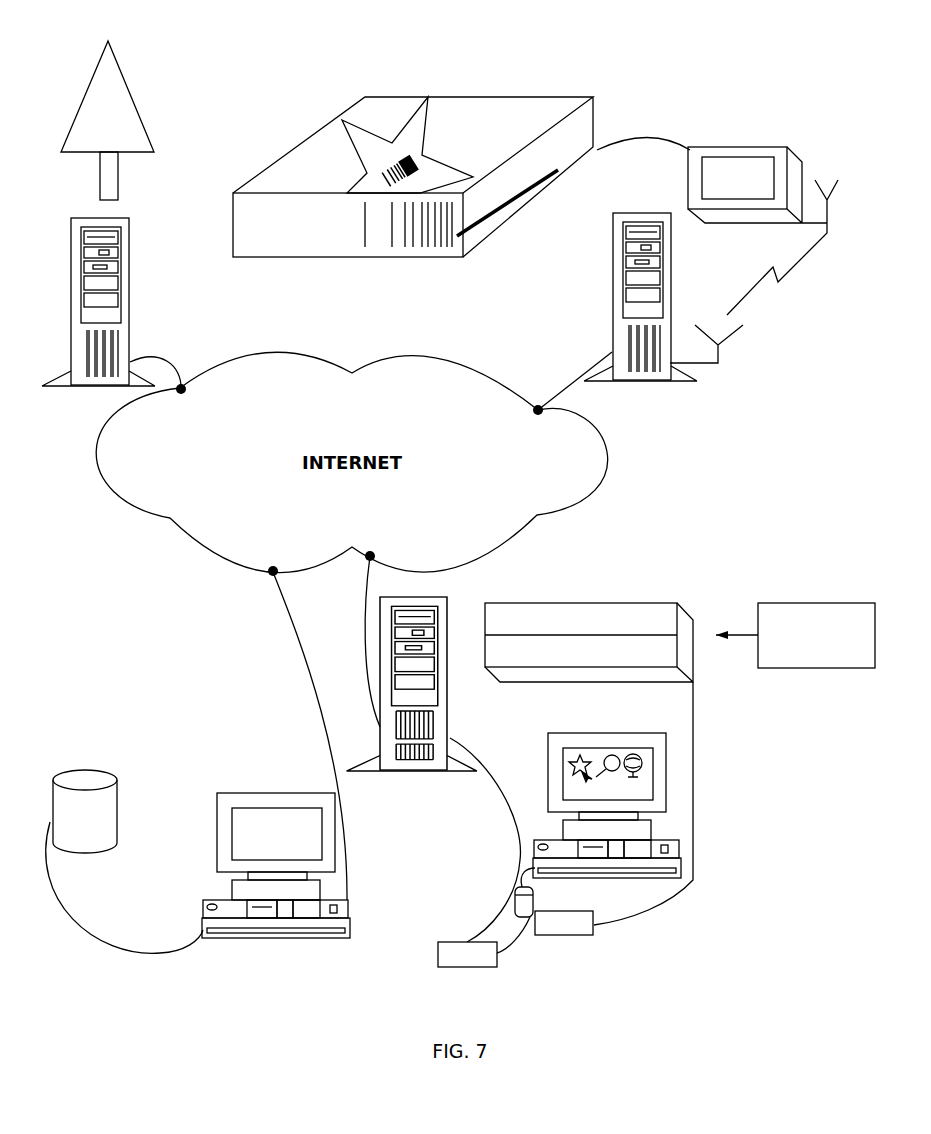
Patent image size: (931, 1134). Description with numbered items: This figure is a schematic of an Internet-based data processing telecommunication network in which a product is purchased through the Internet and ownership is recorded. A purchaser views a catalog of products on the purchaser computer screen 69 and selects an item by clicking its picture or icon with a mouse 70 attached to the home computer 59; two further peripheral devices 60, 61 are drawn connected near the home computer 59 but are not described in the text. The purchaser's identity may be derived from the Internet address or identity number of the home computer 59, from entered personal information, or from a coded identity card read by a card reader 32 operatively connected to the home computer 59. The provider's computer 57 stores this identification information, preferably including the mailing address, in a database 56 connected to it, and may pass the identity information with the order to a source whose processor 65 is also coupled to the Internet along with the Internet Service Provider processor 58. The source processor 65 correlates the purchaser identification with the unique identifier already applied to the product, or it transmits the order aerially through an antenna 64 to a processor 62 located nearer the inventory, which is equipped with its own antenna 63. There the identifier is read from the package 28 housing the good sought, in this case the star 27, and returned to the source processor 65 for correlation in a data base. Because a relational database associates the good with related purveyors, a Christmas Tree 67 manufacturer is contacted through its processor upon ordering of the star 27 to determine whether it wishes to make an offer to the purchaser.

The product 27 is at (431, 96).
The package 28 is at (413, 132).
The card reader 32 is at (580, 600).
The database 56 is at (123, 787).
The provider's computer 57 is at (352, 915).
The Internet Service Provider processor 58 is at (452, 737).
The purchaser's home computer 59 is at (593, 784).
The peripheral device 60 is at (467, 970).
The peripheral device 61 is at (567, 937).
The processor 62 is at (718, 143).
The antenna 63 is at (830, 168).
The antenna 64 is at (716, 318).
The source processor 65 is at (612, 278).
The Christmas Tree 67 is at (133, 89).
The purchaser computer screen 69 is at (612, 748).
The mouse 70 is at (515, 892).